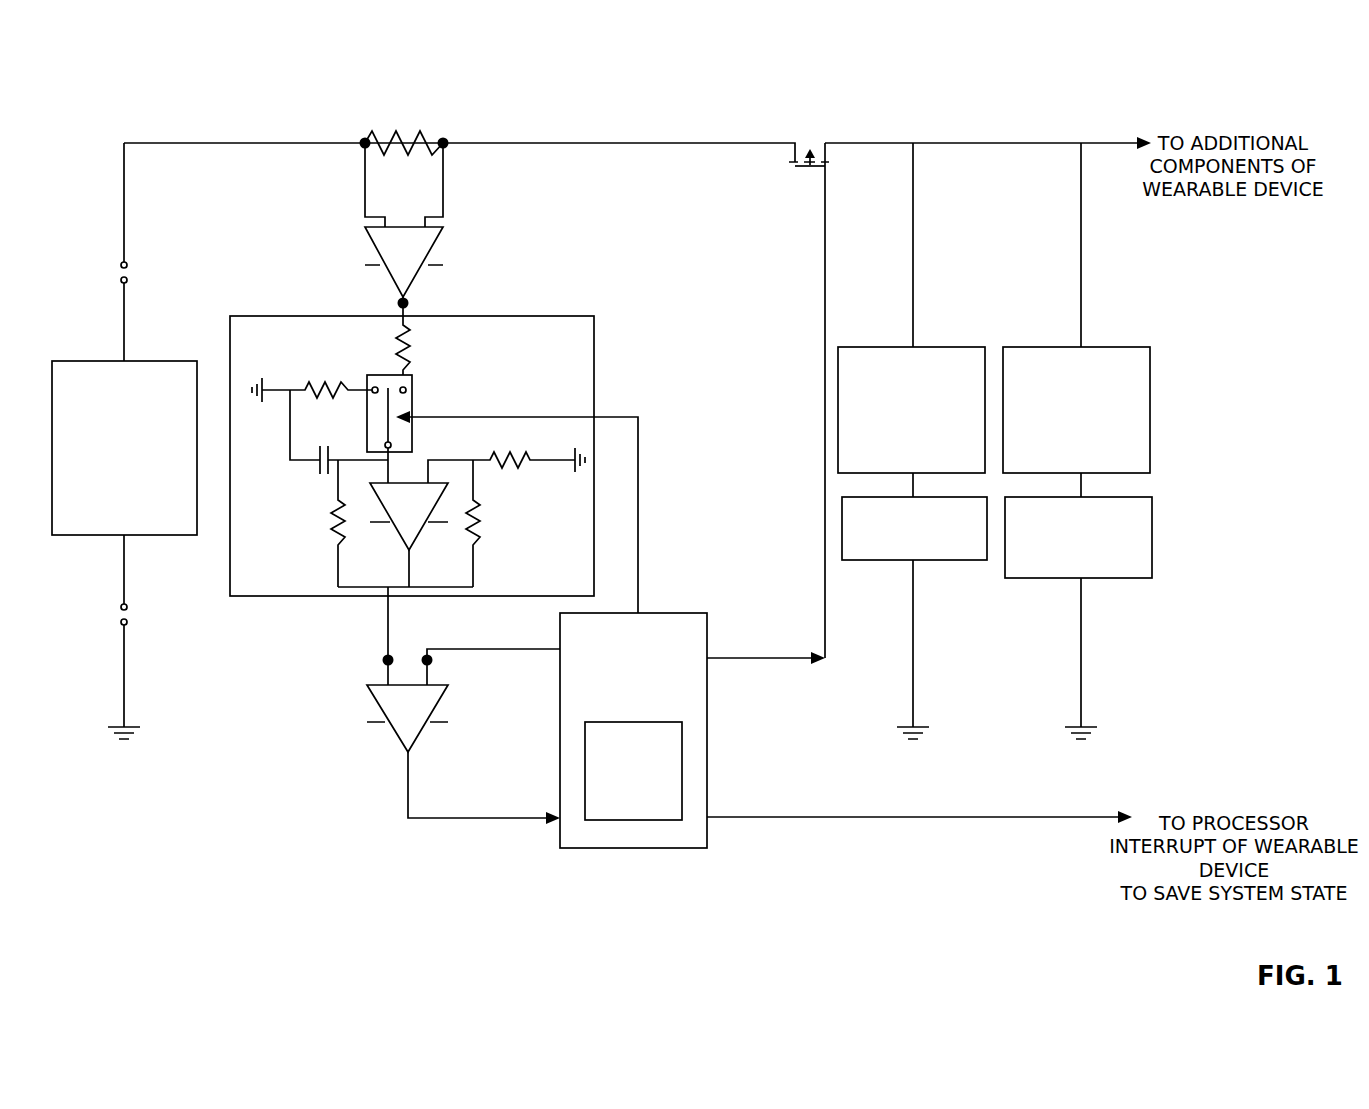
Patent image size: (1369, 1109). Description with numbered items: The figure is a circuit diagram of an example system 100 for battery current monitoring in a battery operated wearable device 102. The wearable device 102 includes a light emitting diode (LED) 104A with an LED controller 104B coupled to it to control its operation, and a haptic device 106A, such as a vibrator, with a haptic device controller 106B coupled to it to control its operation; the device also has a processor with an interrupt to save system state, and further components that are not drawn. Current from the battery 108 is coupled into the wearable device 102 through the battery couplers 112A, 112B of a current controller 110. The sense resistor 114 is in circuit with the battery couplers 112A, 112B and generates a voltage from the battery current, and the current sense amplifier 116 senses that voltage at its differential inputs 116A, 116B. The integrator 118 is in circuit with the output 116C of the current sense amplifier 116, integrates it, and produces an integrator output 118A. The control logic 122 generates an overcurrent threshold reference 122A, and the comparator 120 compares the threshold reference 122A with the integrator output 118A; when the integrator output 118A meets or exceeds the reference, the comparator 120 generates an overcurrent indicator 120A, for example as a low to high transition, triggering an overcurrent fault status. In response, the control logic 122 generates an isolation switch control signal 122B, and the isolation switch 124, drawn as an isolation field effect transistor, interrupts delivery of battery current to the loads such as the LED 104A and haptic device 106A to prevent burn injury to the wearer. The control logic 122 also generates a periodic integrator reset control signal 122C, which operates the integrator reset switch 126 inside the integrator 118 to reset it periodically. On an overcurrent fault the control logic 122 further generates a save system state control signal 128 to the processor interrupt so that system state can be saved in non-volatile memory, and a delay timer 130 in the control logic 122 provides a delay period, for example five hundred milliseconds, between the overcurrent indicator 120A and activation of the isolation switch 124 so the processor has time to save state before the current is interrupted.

The system 100 is at (85, 113).
The battery operated wearable device 102 is at (1332, 109).
The light emitting diode (LED) 104A is at (888, 552).
The LED controller 104B is at (888, 449).
The haptic device 106A is at (1052, 576).
The haptic device controller 106B is at (1052, 449).
The battery 108 is at (106, 464).
The current controller 110 is at (165, 885).
The battery coupler 112A is at (128, 267).
The battery coupler 112B is at (128, 622).
The sense resistor 114 is at (497, 119).
The current sense amplifier 116 is at (512, 299).
The differential input 116A is at (361, 148).
The differential input 116B is at (447, 148).
The output of the current sense amplifier 116C is at (397, 305).
The integrator 118 is at (494, 369).
The integrator output 118A is at (382, 660).
The comparator 120 is at (270, 757).
The overcurrent indicator 120A is at (458, 847).
The control logic 122 is at (616, 690).
The overcurrent threshold reference 122A is at (433, 660).
The isolation switch control signal 122B is at (756, 786).
The integrator reset control signal 122C is at (784, 591).
The isolation switch 124 is at (766, 207).
The integrator reset switch 126 is at (368, 376).
The save system state control signal 128 is at (869, 897).
The delay timer 130 is at (633, 771).